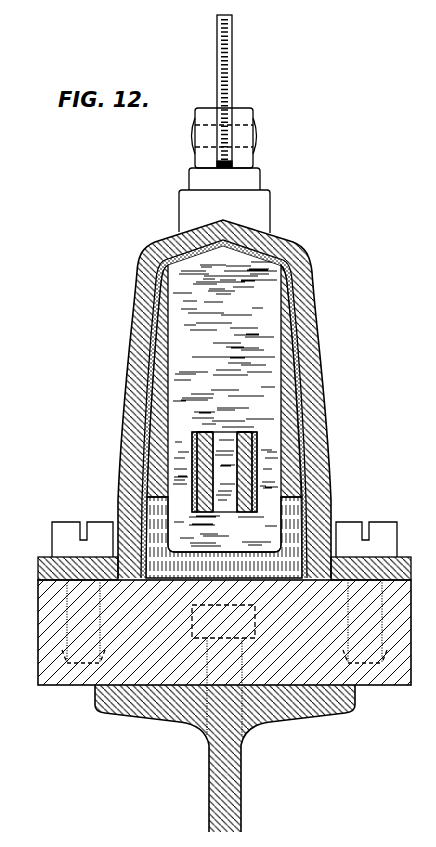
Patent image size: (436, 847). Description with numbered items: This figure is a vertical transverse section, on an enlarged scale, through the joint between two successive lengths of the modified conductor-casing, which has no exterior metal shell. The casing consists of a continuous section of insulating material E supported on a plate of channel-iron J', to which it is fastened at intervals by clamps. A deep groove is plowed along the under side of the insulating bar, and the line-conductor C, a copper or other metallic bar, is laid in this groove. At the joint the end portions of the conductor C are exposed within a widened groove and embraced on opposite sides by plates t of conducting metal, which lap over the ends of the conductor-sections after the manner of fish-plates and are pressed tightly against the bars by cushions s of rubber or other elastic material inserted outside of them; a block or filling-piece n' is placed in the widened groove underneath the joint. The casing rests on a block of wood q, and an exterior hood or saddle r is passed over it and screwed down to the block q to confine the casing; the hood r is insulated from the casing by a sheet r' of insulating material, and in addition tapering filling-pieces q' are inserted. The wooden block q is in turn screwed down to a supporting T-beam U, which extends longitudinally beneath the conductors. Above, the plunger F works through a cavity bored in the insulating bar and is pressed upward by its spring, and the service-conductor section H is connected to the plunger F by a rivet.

The service-conductor section H is at (235, 80).
The plunger F is at (252, 163).
The strap or hood r is at (224, 400).
The sheet of insulating material r' is at (203, 409).
The tapering filling-piece q' is at (224, 381).
The insulating material E is at (225, 375).
The line-conductor C is at (224, 472).
The cushion s is at (265, 472).
The fish-plate t is at (207, 431).
The block or filling-piece n' is at (224, 524).
The channel-iron J' is at (224, 537).
The block of wood q is at (208, 657).
The supporting T-beam U is at (242, 770).